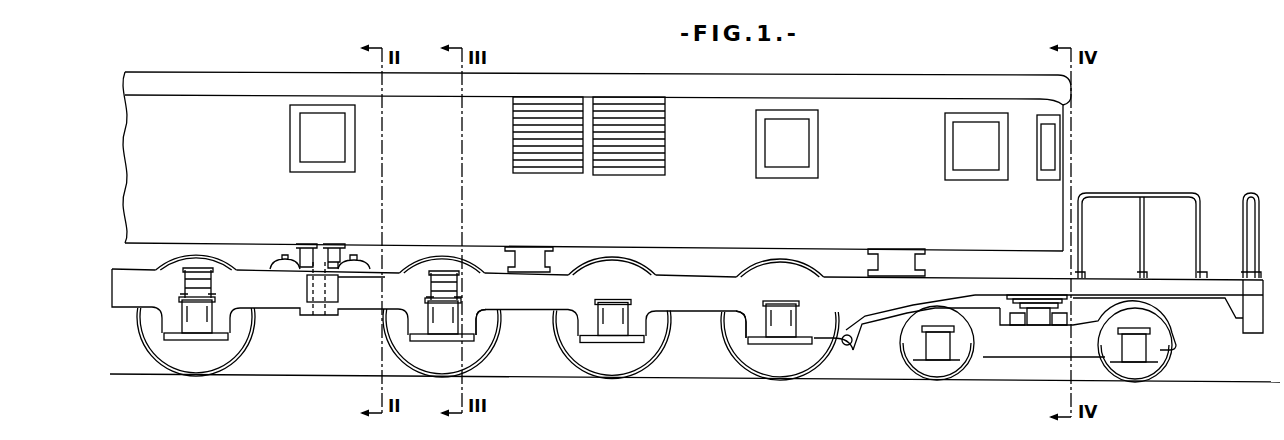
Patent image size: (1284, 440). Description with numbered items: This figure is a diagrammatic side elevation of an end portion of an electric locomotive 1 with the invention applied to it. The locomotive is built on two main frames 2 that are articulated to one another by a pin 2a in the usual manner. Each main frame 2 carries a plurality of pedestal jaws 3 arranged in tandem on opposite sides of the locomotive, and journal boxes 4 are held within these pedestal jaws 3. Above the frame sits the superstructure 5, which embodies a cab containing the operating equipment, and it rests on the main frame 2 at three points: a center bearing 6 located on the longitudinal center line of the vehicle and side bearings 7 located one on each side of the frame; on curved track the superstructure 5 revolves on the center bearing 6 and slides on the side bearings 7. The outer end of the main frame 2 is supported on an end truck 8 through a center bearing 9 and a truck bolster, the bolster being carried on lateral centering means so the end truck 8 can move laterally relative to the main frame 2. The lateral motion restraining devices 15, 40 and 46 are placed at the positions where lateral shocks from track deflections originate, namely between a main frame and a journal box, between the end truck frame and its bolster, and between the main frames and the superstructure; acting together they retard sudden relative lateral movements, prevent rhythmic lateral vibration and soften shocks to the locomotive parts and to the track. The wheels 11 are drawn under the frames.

The electric locomotive 1 is at (693, 202).
The main frame 2 is at (687, 302).
The pin 2a is at (320, 305).
The pedestal jaw 3 is at (473, 327).
The journal box 4 is at (183, 318).
The superstructure 5 is at (589, 162).
The center bearing 6 is at (893, 263).
The side bearing 7 is at (530, 257).
The end truck 8 is at (1038, 341).
The center bearing 9 is at (1032, 296).
The wheel 11 is at (214, 358).
The lateral motion restraining device 15 is at (199, 270).
The lateral motion restraining device 40 is at (1035, 326).
The lateral motion restraining device 46 is at (286, 262).